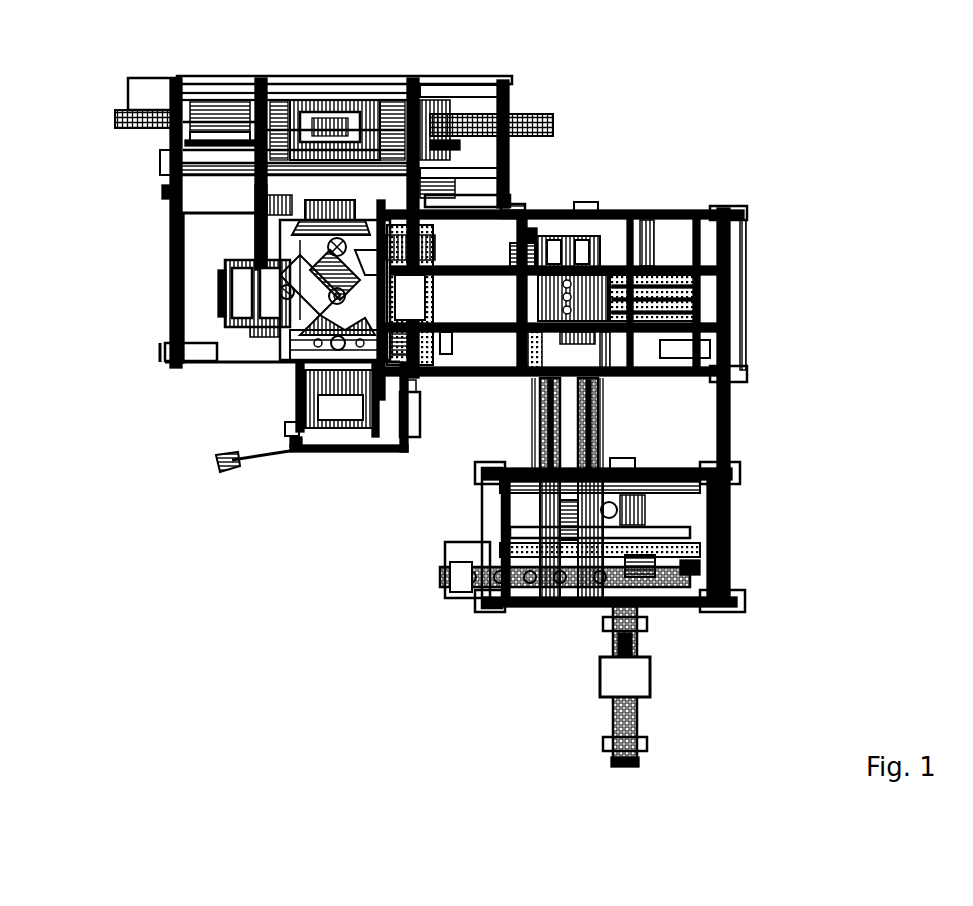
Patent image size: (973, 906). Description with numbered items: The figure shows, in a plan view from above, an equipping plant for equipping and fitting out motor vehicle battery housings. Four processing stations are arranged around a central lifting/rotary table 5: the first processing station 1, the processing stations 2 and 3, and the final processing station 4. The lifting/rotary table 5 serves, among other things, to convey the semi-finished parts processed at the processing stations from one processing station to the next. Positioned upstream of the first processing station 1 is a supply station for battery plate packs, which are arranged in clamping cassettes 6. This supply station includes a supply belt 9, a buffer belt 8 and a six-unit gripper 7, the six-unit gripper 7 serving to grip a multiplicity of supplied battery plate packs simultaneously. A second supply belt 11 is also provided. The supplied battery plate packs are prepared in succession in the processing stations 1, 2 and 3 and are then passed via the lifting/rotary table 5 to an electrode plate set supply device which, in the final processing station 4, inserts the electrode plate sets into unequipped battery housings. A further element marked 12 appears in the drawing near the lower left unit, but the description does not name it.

The first processing station 1 is at (562, 381).
The processing station 2 is at (342, 416).
The processing station 3 is at (231, 274).
The final processing station 4 is at (343, 105).
The lifting/rotary table 5 is at (228, 308).
The clamping cassettes 6 is at (430, 201).
The six-unit gripper 7 is at (438, 290).
The buffer belt 8 is at (641, 273).
The supply belt 9 is at (730, 607).
The second supply belt 11 is at (545, 424).
The holder 12 is at (405, 438).